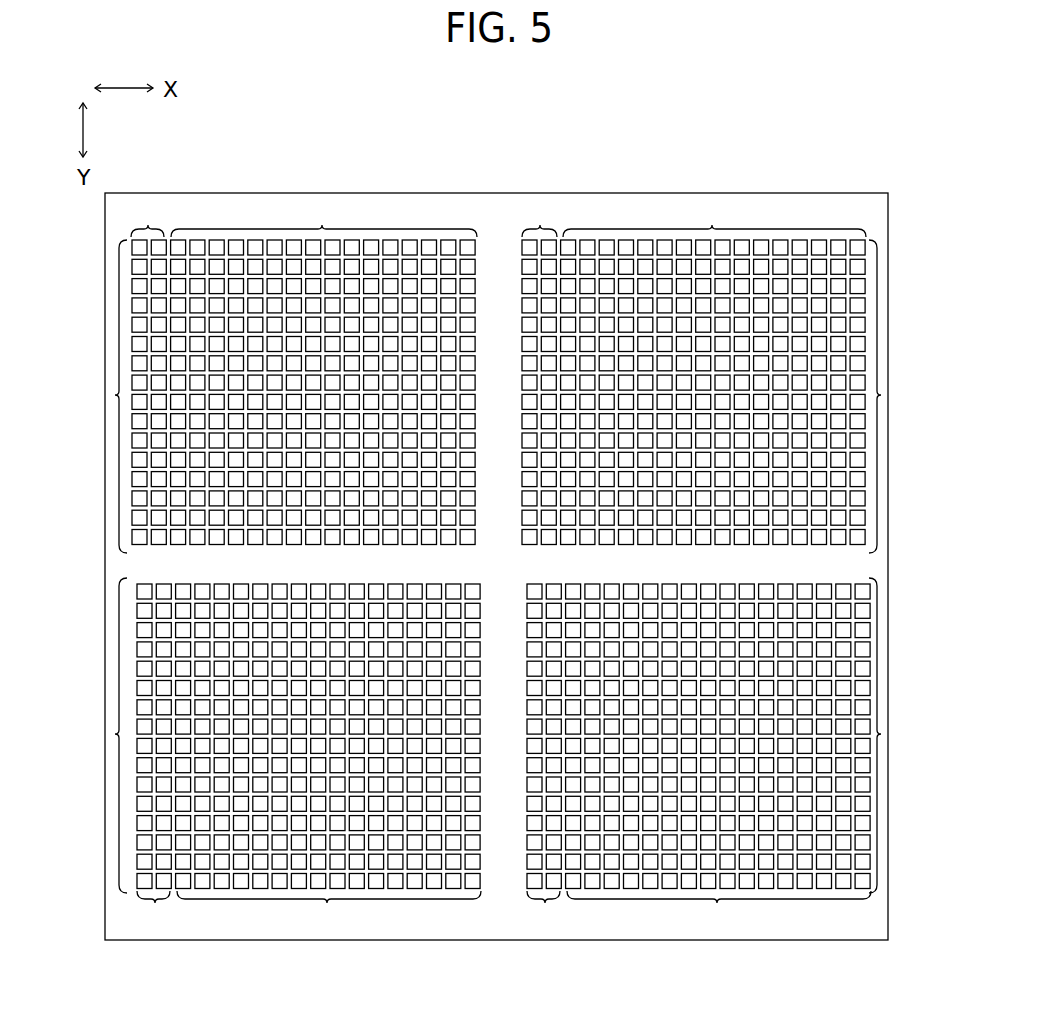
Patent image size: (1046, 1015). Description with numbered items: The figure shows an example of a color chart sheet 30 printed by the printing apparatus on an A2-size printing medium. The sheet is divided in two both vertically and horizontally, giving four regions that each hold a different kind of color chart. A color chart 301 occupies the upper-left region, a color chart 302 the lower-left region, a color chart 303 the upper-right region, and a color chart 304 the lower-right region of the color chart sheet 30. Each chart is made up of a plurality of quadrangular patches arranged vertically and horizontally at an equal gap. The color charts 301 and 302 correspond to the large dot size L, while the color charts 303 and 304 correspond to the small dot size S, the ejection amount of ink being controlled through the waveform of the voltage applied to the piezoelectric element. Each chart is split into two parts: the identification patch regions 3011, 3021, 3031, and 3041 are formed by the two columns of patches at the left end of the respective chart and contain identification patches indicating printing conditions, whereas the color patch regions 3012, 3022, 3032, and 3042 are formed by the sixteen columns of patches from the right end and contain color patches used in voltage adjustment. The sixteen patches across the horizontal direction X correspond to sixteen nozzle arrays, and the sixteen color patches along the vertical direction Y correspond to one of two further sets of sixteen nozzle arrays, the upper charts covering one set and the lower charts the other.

The color chart sheet 30 is at (817, 193).
The color chart 301 is at (114, 395).
The identification patch region 3011 is at (148, 226).
The color patch region 3012 is at (322, 226).
The color chart 302 is at (114, 734).
The identification patch region 3021 is at (155, 902).
The color patch region 3022 is at (327, 902).
The color chart 303 is at (882, 395).
The identification patch region 3031 is at (540, 226).
The color patch region 3032 is at (712, 226).
The color chart 304 is at (882, 734).
The identification patch region 3041 is at (545, 902).
The color patch region 3042 is at (717, 902).